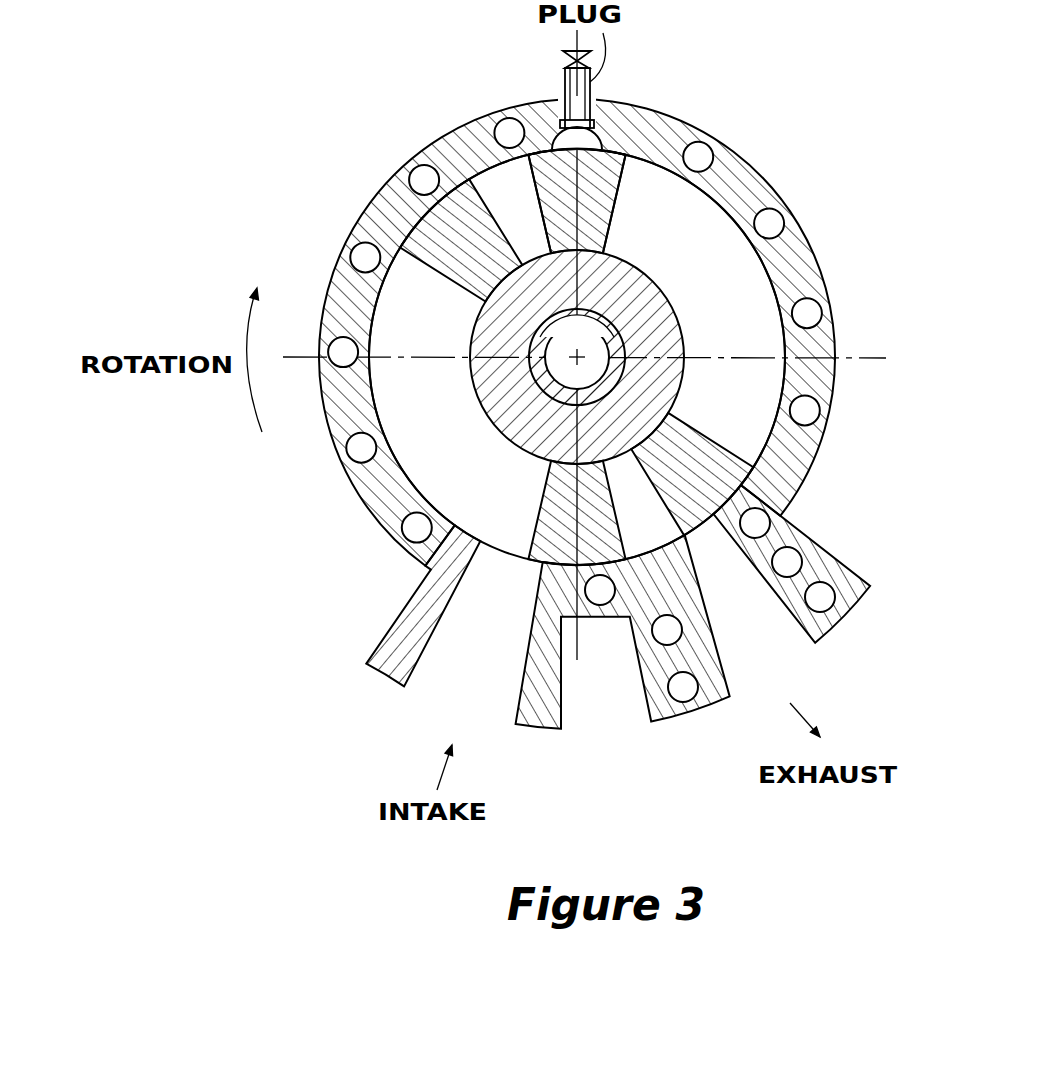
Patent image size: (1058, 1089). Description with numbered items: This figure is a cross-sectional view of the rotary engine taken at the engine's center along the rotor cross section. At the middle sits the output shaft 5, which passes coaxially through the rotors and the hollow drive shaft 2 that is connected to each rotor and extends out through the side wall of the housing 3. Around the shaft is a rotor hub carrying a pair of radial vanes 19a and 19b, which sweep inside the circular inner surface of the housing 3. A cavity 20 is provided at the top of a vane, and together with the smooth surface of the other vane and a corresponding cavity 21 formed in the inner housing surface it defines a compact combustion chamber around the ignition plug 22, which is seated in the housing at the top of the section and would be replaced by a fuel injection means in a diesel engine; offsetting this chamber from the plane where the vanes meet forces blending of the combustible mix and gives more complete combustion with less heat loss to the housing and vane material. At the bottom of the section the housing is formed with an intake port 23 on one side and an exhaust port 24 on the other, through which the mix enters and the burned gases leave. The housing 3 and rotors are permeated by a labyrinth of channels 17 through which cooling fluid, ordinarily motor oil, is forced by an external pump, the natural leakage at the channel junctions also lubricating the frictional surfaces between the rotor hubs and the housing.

The hollow drive shaft 2 is at (612, 347).
The housing 3 is at (445, 133).
The output shaft 5 is at (657, 352).
The channels 17 is at (812, 414).
The radial vane 19a is at (428, 233).
The radial vane 19b is at (623, 168).
The cavity 20 is at (528, 558).
The cavity 21 is at (552, 140).
The ignition plug 22 is at (603, 188).
The intake port 23 is at (433, 682).
The exhaust port 24 is at (770, 647).